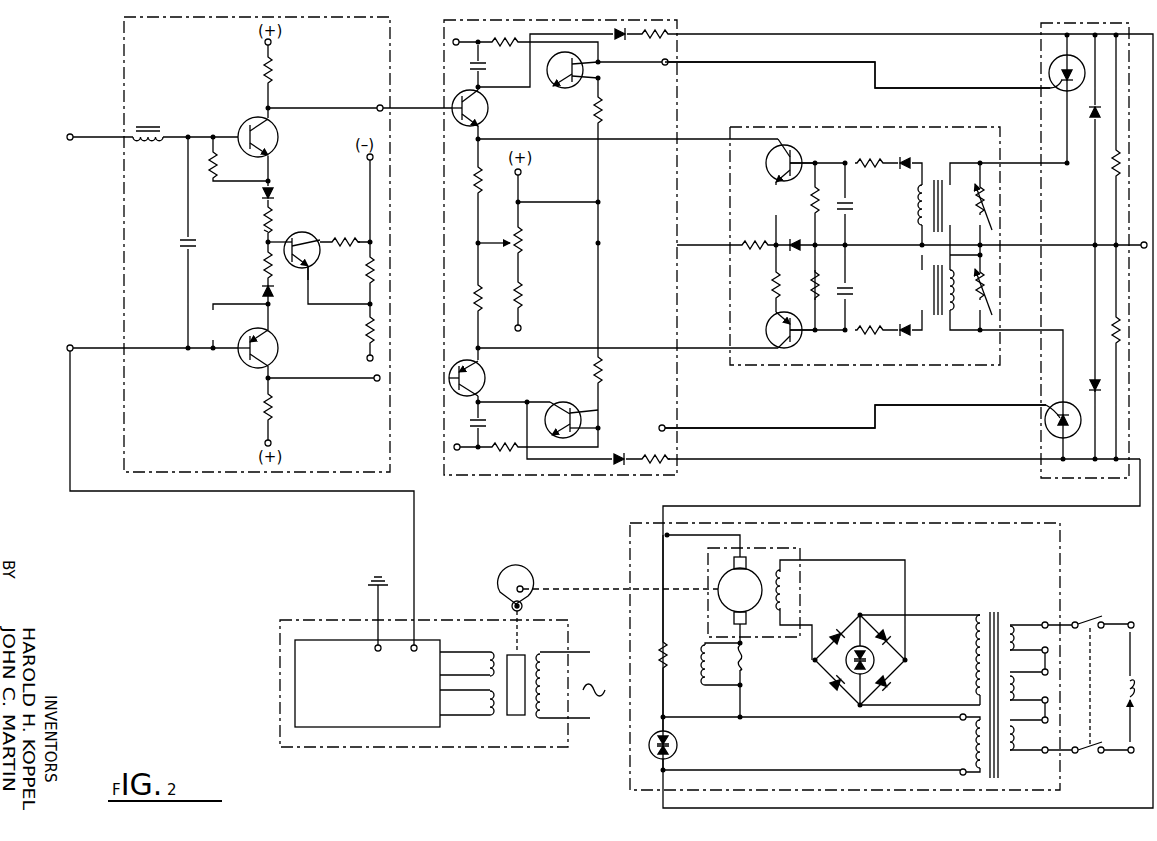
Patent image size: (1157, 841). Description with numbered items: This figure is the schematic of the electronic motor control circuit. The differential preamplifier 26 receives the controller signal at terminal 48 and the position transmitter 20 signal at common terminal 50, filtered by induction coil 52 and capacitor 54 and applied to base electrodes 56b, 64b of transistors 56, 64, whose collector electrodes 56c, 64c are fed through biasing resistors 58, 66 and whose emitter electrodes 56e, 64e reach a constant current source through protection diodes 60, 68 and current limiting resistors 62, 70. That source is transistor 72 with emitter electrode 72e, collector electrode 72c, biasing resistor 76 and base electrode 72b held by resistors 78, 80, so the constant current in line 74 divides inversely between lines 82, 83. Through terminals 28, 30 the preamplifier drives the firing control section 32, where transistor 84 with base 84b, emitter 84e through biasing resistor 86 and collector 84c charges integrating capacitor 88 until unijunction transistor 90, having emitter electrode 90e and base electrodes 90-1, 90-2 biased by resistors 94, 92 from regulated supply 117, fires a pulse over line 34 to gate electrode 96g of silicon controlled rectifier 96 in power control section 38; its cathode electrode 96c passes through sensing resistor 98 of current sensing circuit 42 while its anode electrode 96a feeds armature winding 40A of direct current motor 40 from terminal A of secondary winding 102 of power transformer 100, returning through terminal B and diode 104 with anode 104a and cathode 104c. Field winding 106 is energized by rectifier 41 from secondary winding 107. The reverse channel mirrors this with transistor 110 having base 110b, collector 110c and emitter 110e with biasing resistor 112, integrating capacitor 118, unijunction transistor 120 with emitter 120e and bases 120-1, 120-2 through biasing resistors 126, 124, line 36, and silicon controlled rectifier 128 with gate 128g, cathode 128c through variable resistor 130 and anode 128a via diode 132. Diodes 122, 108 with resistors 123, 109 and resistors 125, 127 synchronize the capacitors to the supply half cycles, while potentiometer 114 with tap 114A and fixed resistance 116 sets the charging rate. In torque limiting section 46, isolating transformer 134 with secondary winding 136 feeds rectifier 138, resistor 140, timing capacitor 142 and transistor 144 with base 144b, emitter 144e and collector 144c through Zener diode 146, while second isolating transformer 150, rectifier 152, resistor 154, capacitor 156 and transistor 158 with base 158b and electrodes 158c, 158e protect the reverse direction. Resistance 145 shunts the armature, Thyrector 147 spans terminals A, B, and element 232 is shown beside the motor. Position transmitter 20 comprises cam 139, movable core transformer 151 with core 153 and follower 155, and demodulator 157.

The position transmitter 20 is at (435, 747).
The differential preamplifier 26 is at (124, 47).
The output terminal 28 is at (380, 105).
The output terminal 30 is at (378, 382).
The firing control section 32 is at (677, 100).
The line 34 is at (805, 61).
The line 36 is at (785, 427).
The power control section 38 is at (1040, 27).
The shunt wound direct current motor 40 is at (755, 640).
The armature winding 40A is at (720, 588).
The rectifier 41 is at (920, 701).
The current sensing circuit 42 is at (978, 127).
The torque limiting section 46 is at (748, 127).
The terminal 48 is at (68, 134).
The terminal 50 is at (68, 346).
The induction coil 52 is at (150, 146).
The capacitor 54 is at (182, 246).
The N-P-N transistor 56 is at (280, 133).
The base electrode 56b is at (232, 166).
The collector electrode 56c is at (250, 124).
The emitter electrode 56e is at (272, 150).
The biasing resistor 58 is at (274, 72).
The reverse bias protection diode 60 is at (277, 194).
The current limiting resistor 62 is at (263, 210).
The transistor 64 is at (280, 350).
The base electrode 64b is at (240, 355).
The collector electrode 64c is at (258, 368).
The emitter electrode 64e is at (274, 340).
The biasing resistor 66 is at (274, 412).
The reverse bias protection diode 68 is at (262, 292).
The current limiting resistor 70 is at (263, 270).
The N-P-N transistor 72 is at (300, 277).
The base electrode 72b is at (327, 283).
The collector 72c is at (312, 238).
The emitter electrode 72e is at (321, 265).
The line 74 is at (278, 240).
The biasing resistor 76 is at (345, 238).
The resistor 78 is at (380, 268).
The resistor 80 is at (380, 330).
The line 82 is at (263, 233).
The line 83 is at (264, 243).
The P-N-P transistor 84 is at (488, 122).
The base electrode 84b is at (450, 106).
The collector electrode 84c is at (476, 97).
The emitter electrode 84e is at (462, 134).
The biasing resistor 86 is at (474, 182).
The integrating capacitor 88 is at (470, 66).
The unijunction transistor 90 is at (585, 74).
The base electrode 90-1 is at (586, 64).
The base electrode 90-2 is at (586, 78).
The emitter electrode 90e is at (553, 88).
The biasing resistor 92 is at (603, 118).
The biasing resistor 94 is at (505, 59).
The silicon controlled rectifier 96 is at (1083, 72).
The anode electrode 96a is at (1056, 67).
The cathode electrode 96c is at (1058, 78).
The gate electrode 96g is at (1048, 88).
The variable resistor 98 is at (992, 214).
The power transformer 100 is at (1013, 613).
The secondary winding 102 is at (965, 754).
The rectifying element 104 is at (1090, 382).
The anode 104a is at (1100, 384).
The cathode 104c is at (1100, 390).
The field winding 106 is at (790, 600).
The secondary winding 107 is at (972, 652).
The diode 108 is at (620, 40).
The resistor 109 is at (668, 38).
The transistor 110 is at (481, 372).
The base electrode 110b is at (450, 390).
The collector electrode 110c is at (480, 386).
The emitter electrode 110e is at (474, 360).
The biasing resistor 112 is at (475, 296).
The potentiometer 114 is at (530, 246).
The tap 114A is at (498, 240).
The fixed resistance 116 is at (528, 295).
The regulated positive direct current supply 117 is at (522, 173).
The integrating capacitor 118 is at (488, 422).
The unijunction transistor 120 is at (568, 402).
The base 120-1 is at (585, 428).
The base electrode 120-2 is at (585, 410).
The emitter electrode 120e is at (563, 437).
The diode 122 is at (618, 465).
The resistor 123 is at (665, 462).
The biasing resistor 124 is at (606, 370).
The resistor 125 is at (1110, 165).
The biasing resistor 126 is at (500, 455).
The resistor 127 is at (1110, 330).
The silicon controlled rectifier 128 is at (1050, 410).
The anode 128a is at (1068, 440).
The cathode electrode 128c is at (1056, 430).
The gate electrode 128g is at (1048, 420).
The variable resistor 130 is at (992, 300).
The diode 132 is at (1090, 113).
The isolating transformer 134 is at (940, 182).
The secondary winding 136 is at (918, 218).
The rectifier 138 is at (908, 156).
The cam 139 is at (508, 566).
The resistor 140 is at (868, 160).
The timing capacitor 142 is at (855, 208).
The transistor 144 is at (768, 160).
The base electrode 144b is at (800, 162).
The collector 144c is at (795, 150).
The emitter electrode 144e is at (778, 176).
The resistance 145 is at (672, 655).
The Zener diode 146 is at (800, 242).
The Thyrector 147 is at (680, 750).
The second isolating transformer 150 is at (935, 312).
The movable core transformer 151 is at (530, 744).
The rectifier 152 is at (906, 335).
The movable core 153 is at (510, 655).
The resistor 154 is at (865, 333).
The follower 155 is at (511, 606).
The capacitor 156 is at (852, 290).
The demodulator 157 is at (318, 640).
The transistor 158 is at (770, 318).
The base electrode 158b is at (800, 340).
The collector 158c is at (768, 340).
The emitter 158e is at (768, 326).
The thermal element 232 is at (745, 668).
The terminal A is at (960, 720).
The terminal B is at (960, 773).